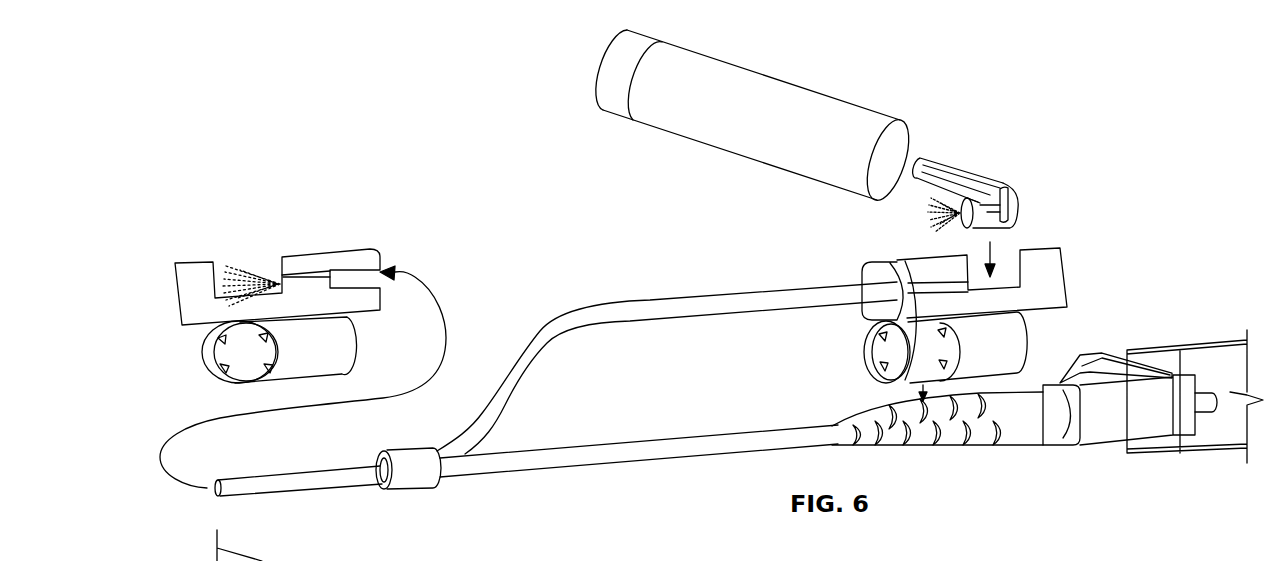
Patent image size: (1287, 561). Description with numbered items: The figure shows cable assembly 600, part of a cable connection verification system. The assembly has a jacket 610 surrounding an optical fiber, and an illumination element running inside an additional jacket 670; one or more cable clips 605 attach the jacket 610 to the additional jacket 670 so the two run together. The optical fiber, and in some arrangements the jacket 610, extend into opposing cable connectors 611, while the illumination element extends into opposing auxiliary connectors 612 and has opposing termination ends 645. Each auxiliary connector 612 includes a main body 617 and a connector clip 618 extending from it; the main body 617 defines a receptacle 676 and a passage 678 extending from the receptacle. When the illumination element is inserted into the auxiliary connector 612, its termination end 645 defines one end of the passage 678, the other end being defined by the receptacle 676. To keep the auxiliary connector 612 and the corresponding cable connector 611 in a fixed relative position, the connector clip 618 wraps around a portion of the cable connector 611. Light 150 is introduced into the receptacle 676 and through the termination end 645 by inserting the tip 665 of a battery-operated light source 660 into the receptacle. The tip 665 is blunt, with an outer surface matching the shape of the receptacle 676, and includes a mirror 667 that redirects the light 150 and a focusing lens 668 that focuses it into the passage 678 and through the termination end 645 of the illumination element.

The cable assembly 600 is at (381, 90).
The light 150 is at (193, 244).
The auxiliary connector 612 is at (313, 237).
The cable clip 605 is at (417, 478).
The jacket 610 is at (572, 458).
The additional jacket 670 is at (610, 318).
The cable connector 611 is at (966, 459).
The main body 617 is at (1041, 294).
The connector clip 618 is at (870, 357).
The passage 678 is at (906, 377).
The termination end 645 is at (905, 262).
The light source 660 is at (800, 66).
The tip 665 is at (986, 160).
The mirror 667 is at (1017, 207).
The focusing lens 668 is at (988, 205).
The receptacle 676 is at (1012, 268).